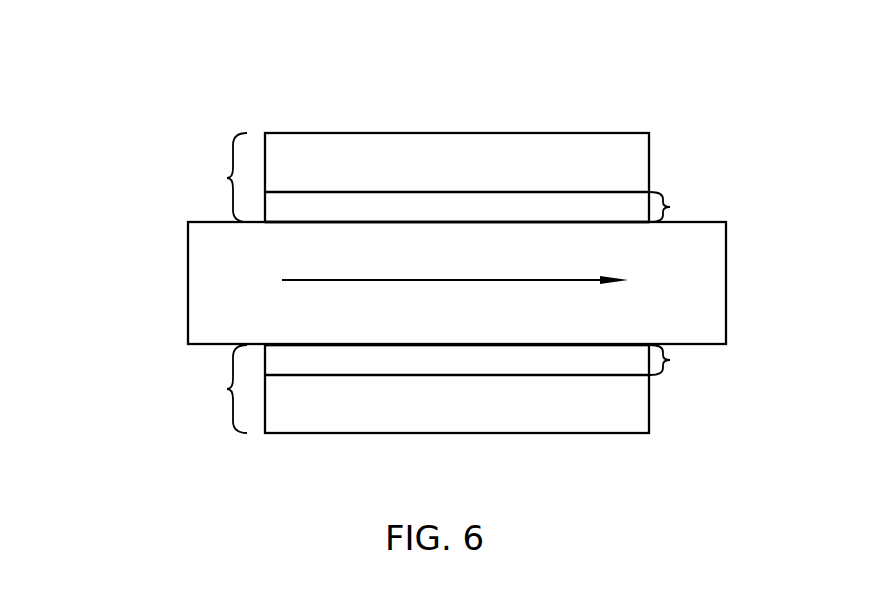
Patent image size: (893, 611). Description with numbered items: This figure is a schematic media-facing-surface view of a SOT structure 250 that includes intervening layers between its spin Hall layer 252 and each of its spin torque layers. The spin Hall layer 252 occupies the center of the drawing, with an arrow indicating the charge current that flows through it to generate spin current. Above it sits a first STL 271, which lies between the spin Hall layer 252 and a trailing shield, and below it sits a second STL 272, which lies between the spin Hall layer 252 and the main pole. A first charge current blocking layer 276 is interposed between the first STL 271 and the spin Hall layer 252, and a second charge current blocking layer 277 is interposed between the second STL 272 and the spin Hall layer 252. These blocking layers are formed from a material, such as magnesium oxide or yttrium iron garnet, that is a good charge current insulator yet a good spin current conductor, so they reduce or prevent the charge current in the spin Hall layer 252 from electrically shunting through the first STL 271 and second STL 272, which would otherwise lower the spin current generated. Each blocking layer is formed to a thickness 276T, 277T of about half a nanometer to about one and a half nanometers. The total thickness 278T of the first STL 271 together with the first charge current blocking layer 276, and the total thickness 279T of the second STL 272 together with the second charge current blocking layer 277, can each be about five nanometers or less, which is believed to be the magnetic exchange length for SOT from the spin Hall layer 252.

The SOT structure 250 is at (132, 72).
The spin Hall layer 252 is at (225, 282).
The first STL 271 is at (497, 133).
The second STL 272 is at (558, 414).
The first charge current blocking layer 276 is at (568, 211).
The second charge current blocking layer 277 is at (592, 361).
The thickness of first charge current blocking layer 276T is at (670, 207).
The thickness of second charge current blocking layer 277T is at (670, 360).
The total thickness of first STL with charge current blocking layer 278T is at (227, 178).
The total thickness of second STL with charge current blocking layer 279T is at (227, 389).